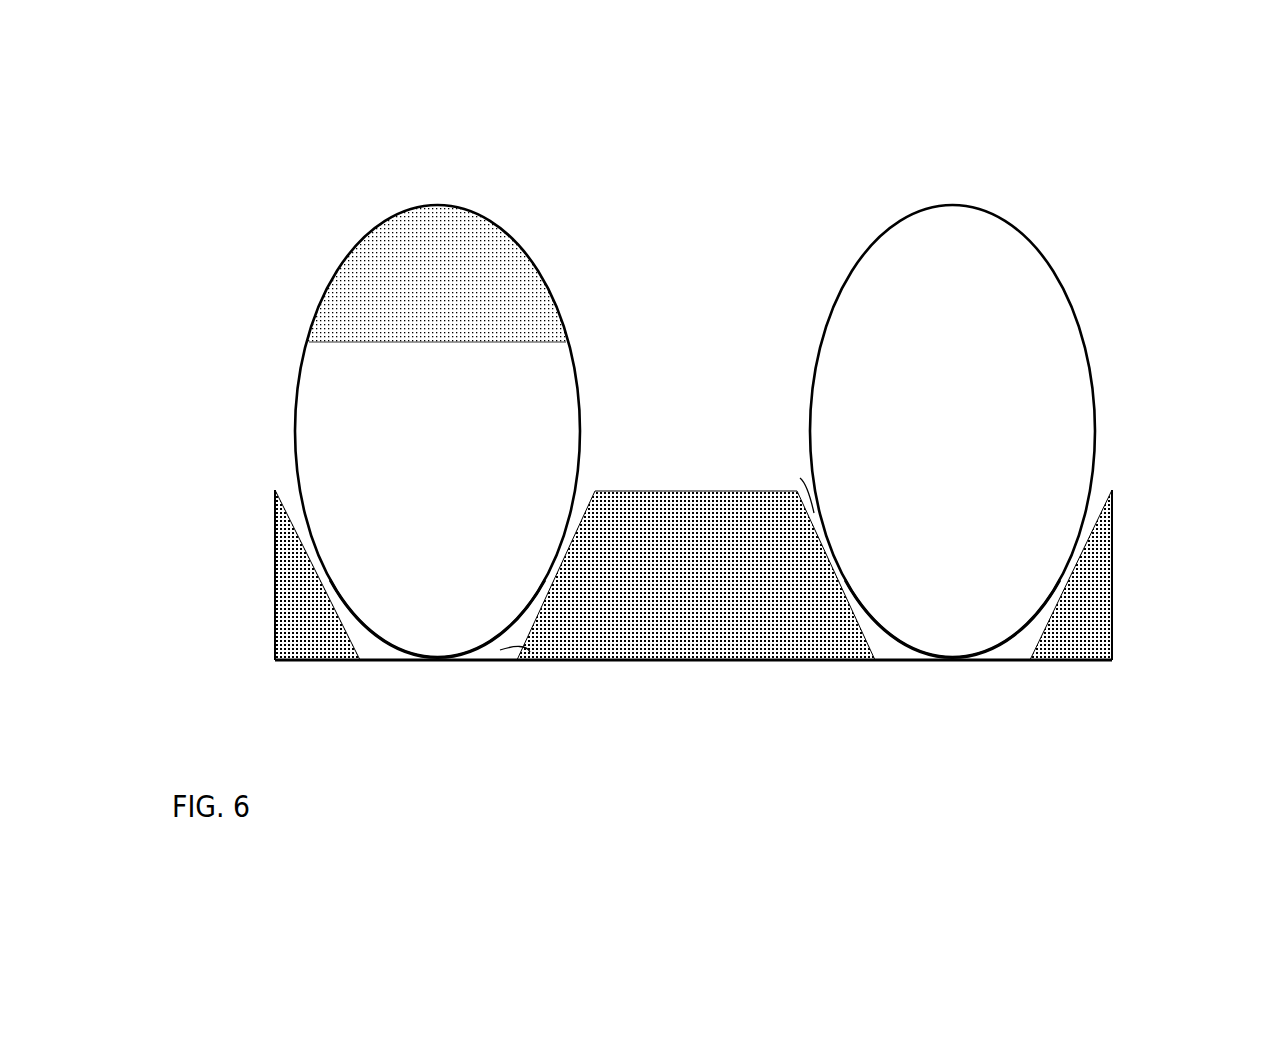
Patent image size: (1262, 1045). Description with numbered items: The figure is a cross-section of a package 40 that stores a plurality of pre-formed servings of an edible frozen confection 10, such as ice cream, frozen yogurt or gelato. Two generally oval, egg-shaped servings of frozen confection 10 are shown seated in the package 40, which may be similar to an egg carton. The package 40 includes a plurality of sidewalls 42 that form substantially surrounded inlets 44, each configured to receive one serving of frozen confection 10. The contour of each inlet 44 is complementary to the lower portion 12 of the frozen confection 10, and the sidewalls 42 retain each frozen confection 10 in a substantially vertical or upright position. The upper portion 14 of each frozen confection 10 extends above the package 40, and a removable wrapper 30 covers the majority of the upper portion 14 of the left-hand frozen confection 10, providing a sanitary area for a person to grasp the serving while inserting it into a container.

The frozen confection 10 is at (649, 381).
The lower portion 12 is at (443, 562).
The upper portion 14 is at (425, 358).
The removable wrapper 30 is at (455, 253).
The package 40 is at (692, 605).
The sidewalls 42 is at (295, 584).
The inlets 44 is at (812, 505).